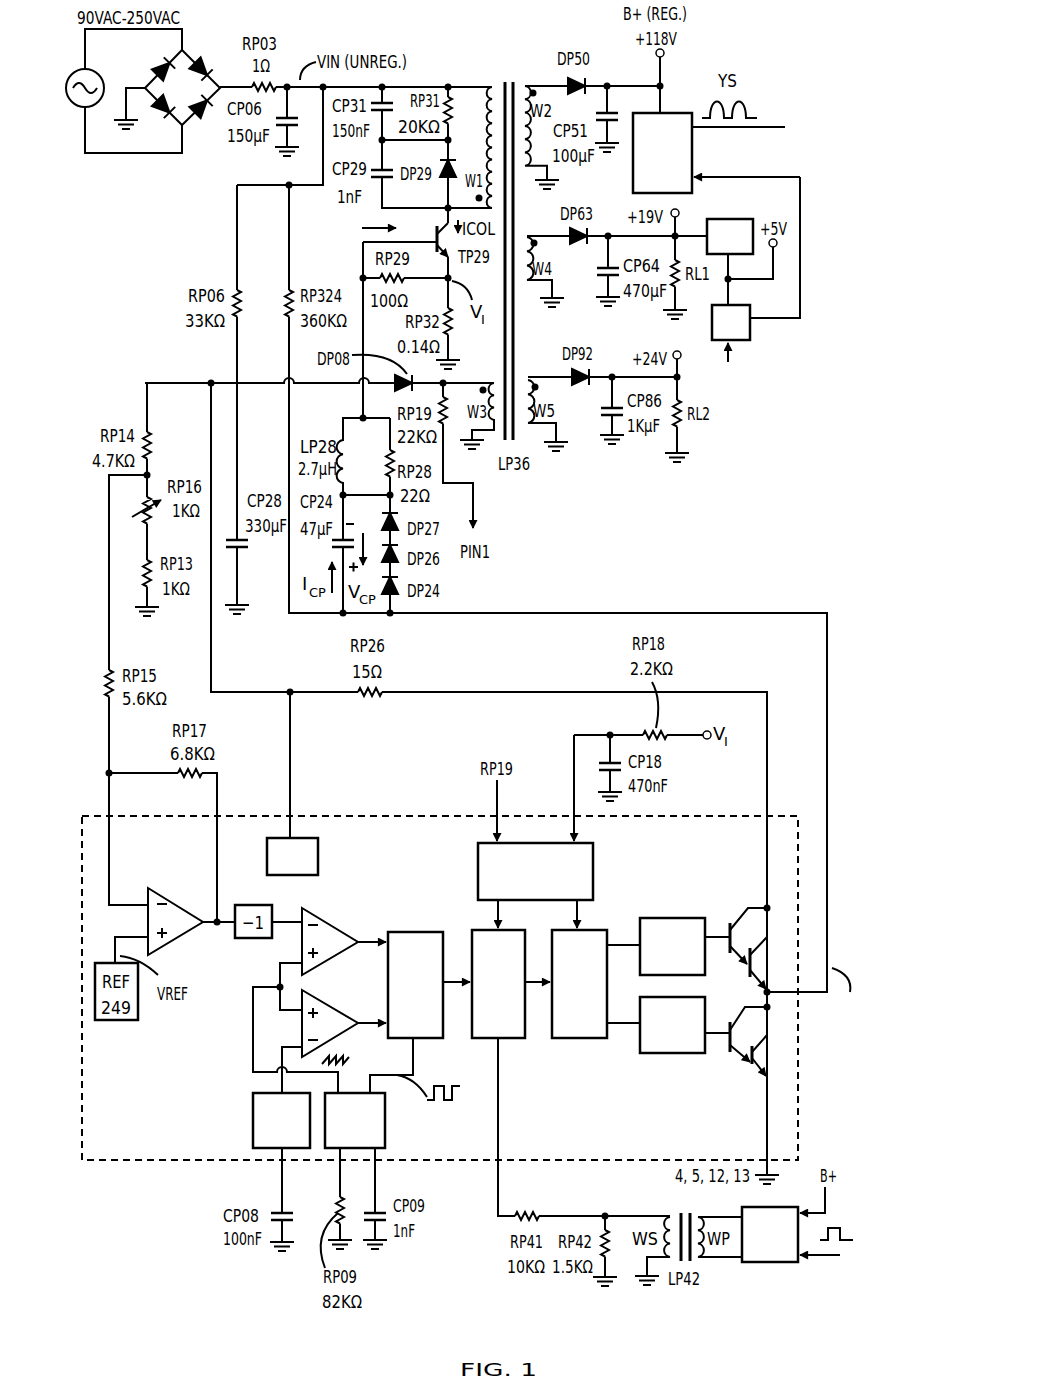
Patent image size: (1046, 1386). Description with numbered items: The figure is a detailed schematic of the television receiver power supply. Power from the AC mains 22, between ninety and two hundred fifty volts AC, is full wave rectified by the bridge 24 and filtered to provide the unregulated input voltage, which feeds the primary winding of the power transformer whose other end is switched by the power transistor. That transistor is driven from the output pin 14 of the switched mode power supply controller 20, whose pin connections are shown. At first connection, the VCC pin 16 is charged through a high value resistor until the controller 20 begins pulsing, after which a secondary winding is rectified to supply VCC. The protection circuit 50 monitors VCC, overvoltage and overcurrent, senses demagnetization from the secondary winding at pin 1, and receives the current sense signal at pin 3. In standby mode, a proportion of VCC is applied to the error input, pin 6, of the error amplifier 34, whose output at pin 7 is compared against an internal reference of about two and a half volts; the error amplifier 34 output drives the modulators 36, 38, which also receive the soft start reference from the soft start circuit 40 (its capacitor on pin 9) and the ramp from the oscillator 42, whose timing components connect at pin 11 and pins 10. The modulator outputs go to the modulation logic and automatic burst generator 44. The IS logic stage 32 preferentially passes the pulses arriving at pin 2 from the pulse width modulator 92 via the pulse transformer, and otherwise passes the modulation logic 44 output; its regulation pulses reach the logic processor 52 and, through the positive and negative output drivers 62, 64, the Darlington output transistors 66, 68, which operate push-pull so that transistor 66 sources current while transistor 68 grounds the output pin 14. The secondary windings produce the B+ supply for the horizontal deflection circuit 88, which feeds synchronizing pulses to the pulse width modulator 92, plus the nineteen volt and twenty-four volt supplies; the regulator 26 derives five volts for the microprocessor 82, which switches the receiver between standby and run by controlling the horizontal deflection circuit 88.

The AC mains 22 is at (96, 72).
The bridge rectifier 24 is at (195, 50).
The regulator 26 is at (716, 219).
The microprocessor 82 is at (742, 342).
The horizontal deflection circuit 88 is at (650, 112).
The switched mode power supply controller 20 is at (350, 817).
The error amplifier 34 is at (180, 900).
The modulator 36 is at (342, 930).
The modulator 38 is at (313, 995).
The modulation logic and automatic burst generator 44 is at (428, 932).
The protection circuit 50 is at (478, 880).
The IS logic stage 32 is at (507, 1040).
The logic processor 52 is at (580, 1040).
The positive output driver 62 is at (678, 917).
The negative output driver 64 is at (672, 1055).
The output transistor 66 is at (750, 960).
The output transistor 68 is at (745, 1058).
The soft start circuit 40 is at (253, 1112).
The oscillator 42 is at (385, 1110).
The pulse width modulator 92 is at (782, 1263).
The output pin 14 is at (831, 987).
The pin 1 is at (493, 836).
The pin 2 is at (499, 1127).
The pin 3 is at (586, 834).
The pin 6 is at (119, 812).
The pin 7 is at (225, 812).
The pin 9 is at (279, 1162).
The pin 10 is at (344, 1180).
The pin 11 is at (343, 1198).
The VCC pin 16 is at (292, 783).